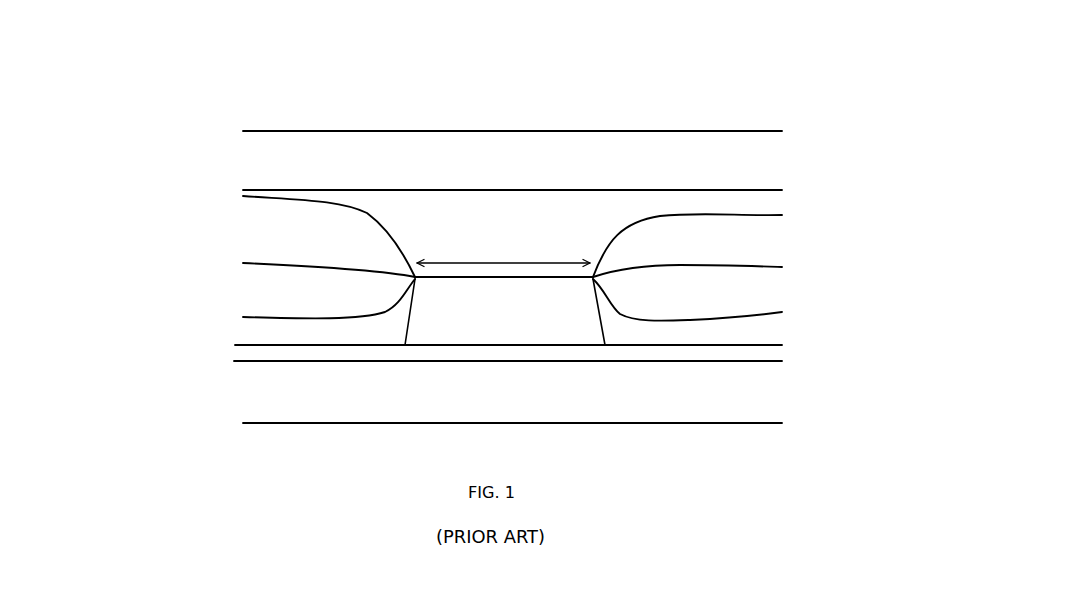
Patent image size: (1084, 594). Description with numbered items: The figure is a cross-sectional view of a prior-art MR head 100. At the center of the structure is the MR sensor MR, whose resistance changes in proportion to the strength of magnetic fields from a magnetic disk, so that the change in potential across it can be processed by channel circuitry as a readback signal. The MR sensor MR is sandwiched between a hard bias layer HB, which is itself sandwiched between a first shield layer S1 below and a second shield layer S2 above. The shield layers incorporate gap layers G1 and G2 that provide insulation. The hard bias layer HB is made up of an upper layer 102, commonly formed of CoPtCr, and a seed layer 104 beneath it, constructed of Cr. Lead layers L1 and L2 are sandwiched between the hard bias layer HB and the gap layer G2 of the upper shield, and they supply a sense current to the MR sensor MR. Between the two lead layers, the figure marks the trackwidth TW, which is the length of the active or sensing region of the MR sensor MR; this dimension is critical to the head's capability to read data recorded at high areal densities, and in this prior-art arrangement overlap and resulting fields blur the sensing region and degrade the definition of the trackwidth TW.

The MR head 100 is at (264, 104).
The upper layer 102 is at (243, 303).
The seed layer 104 is at (243, 332).
The first shield layer S1 is at (772, 398).
The second shield layer S2 is at (743, 168).
The gap layer G1 is at (758, 358).
The gap layer G2 is at (758, 208).
The lead layer L1 is at (257, 236).
The lead layer L2 is at (768, 238).
The hard bias layer HB is at (257, 277).
The trackwidth TW is at (503, 252).
The MR sensor MR is at (432, 325).